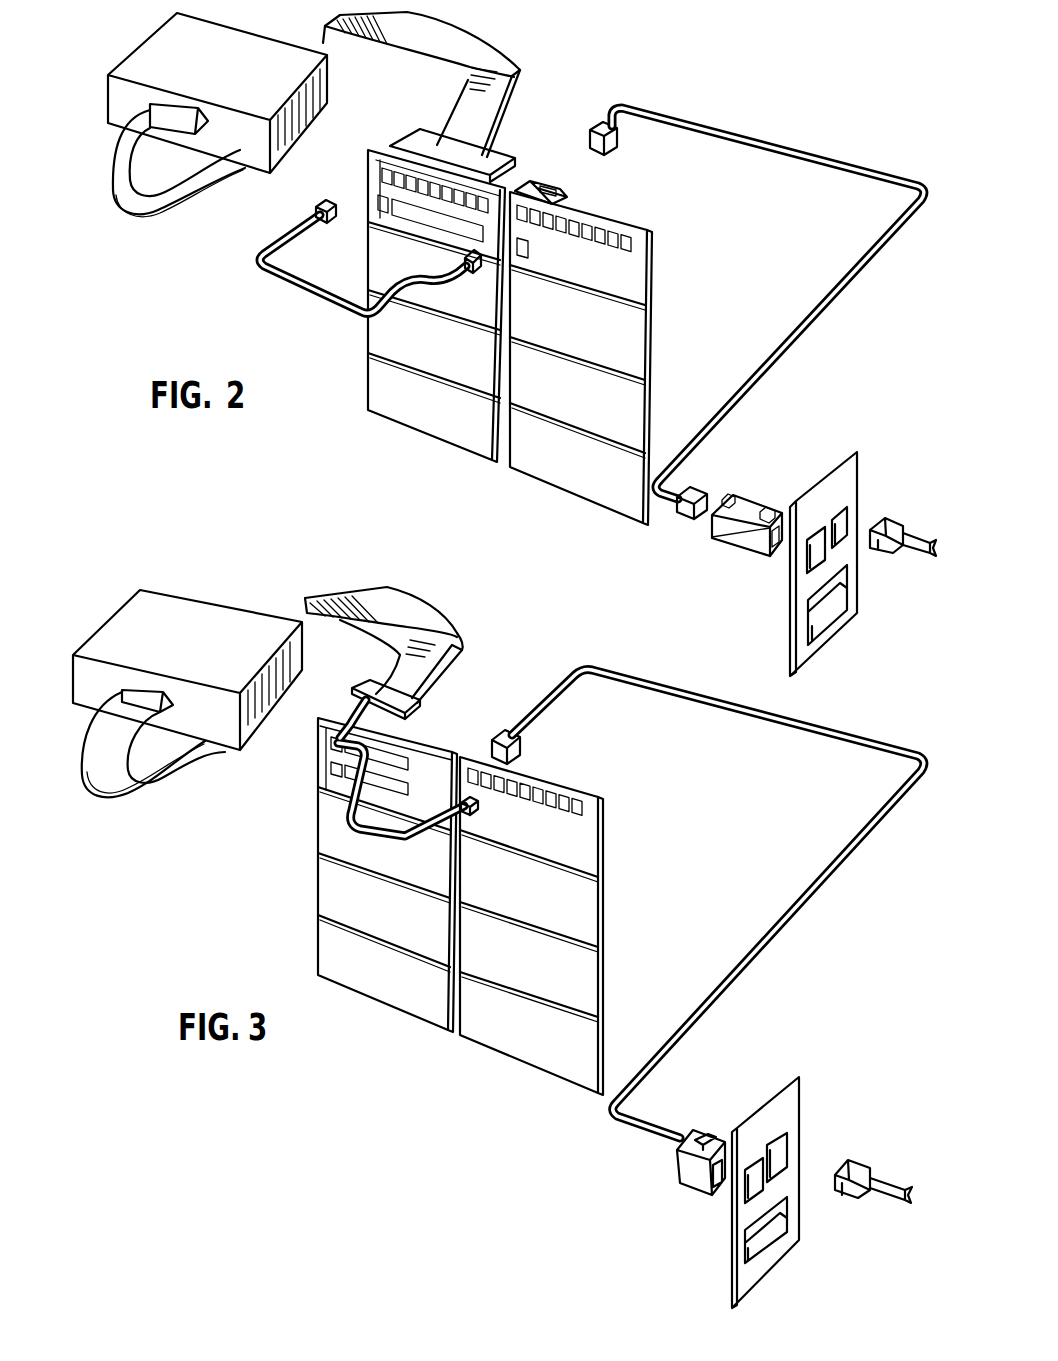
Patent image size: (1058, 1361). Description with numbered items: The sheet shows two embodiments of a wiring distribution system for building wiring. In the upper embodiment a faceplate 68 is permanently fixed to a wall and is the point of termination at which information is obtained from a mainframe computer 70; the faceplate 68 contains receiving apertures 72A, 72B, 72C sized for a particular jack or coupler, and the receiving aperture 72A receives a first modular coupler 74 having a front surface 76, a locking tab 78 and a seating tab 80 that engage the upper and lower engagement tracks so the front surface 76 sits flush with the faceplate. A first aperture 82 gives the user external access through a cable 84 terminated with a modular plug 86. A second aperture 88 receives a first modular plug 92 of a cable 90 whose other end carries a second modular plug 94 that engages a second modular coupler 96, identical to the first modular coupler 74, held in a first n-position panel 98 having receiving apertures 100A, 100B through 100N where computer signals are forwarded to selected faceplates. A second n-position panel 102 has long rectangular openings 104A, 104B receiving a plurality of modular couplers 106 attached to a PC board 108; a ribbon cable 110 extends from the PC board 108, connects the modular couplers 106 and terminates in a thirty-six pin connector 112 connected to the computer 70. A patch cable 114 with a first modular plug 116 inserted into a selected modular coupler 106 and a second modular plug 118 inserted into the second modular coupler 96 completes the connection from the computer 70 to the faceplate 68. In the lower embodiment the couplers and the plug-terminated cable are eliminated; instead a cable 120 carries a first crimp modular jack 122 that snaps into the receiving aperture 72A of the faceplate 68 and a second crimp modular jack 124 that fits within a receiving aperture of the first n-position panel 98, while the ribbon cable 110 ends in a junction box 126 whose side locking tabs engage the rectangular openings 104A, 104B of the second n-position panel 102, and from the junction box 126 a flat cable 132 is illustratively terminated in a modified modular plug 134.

In FIG. 2, the mainframe computer 70 is at (183, 37).
In FIG. 3, the mainframe computer 70 is at (205, 610).
In FIG. 2, the thirty-six pin connector 112 is at (125, 132).
In FIG. 3, the thirty-six pin connector 112 is at (140, 668).
In FIG. 2, the ribbon cable 110 is at (485, 50).
In FIG. 3, the ribbon cable 110 is at (405, 602).
In FIG. 2, the PC board 108 is at (415, 142).
In FIG. 2, the second n-position panel 102 is at (372, 165).
In FIG. 3, the second n-position panel 102 is at (320, 725).
In FIG. 2, the long rectangular opening 104A is at (383, 180).
In FIG. 3, the long rectangular opening 104A is at (330, 750).
In FIG. 2, the long rectangular opening 104B is at (392, 218).
In FIG. 3, the long rectangular opening 104B is at (330, 775).
In FIG. 2, the modular coupler 106 is at (378, 198).
In FIG. 2, the patch cable 114 is at (258, 260).
In FIG. 2, the first modular plug 116 is at (314, 205).
In FIG. 2, the second modular plug 118 is at (432, 312).
In FIG. 2, the first n-position panel 98 is at (650, 252).
In FIG. 3, the first n-position panel 98 is at (605, 835).
In FIG. 2, the receiving aperture 100A is at (520, 203).
In FIG. 3, the receiving aperture 100A is at (473, 766).
In FIG. 2, the receiving aperture 100B is at (545, 188).
In FIG. 2, the receiving aperture 100N is at (635, 240).
In FIG. 3, the receiving aperture 100N is at (585, 810).
In FIG. 2, the second modular coupler 96 is at (562, 200).
In FIG. 2, the second modular plug 94 is at (598, 122).
In FIG. 2, the cable 90 is at (790, 100).
In FIG. 2, the first modular plug 92 is at (672, 511).
In FIG. 2, the second aperture 88 is at (712, 528).
In FIG. 2, the front surface 76 is at (748, 538).
In FIG. 2, the first modular coupler 74 is at (757, 502).
In FIG. 2, the locking tab 78 is at (770, 510).
In FIG. 2, the seating tab 80 is at (765, 552).
In FIG. 2, the first aperture 82 is at (775, 555).
In FIG. 2, the faceplate 68 is at (840, 470).
In FIG. 3, the faceplate 68 is at (790, 1098).
In FIG. 2, the receiving aperture 72A is at (818, 562).
In FIG. 3, the receiving aperture 72A is at (750, 1190).
In FIG. 2, the receiving aperture 72B is at (822, 605).
In FIG. 3, the receiving aperture 72B is at (780, 1160).
In FIG. 2, the receiving aperture 72C is at (840, 530).
In FIG. 3, the receiving aperture 72C is at (750, 1245).
In FIG. 2, the modular plug 86 is at (890, 528).
In FIG. 3, the modular plug 86 is at (858, 1168).
In FIG. 2, the cable 84 is at (922, 542).
In FIG. 3, the cable 84 is at (896, 1182).
In FIG. 3, the junction box 126 is at (380, 688).
In FIG. 3, the flat cable 132 is at (352, 828).
In FIG. 3, the modified modular plug 134 is at (600, 862).
In FIG. 3, the second crimp modular jack 124 is at (505, 730).
In FIG. 3, the cable 120 is at (905, 705).
In FIG. 3, the first crimp modular jack 122 is at (677, 1158).